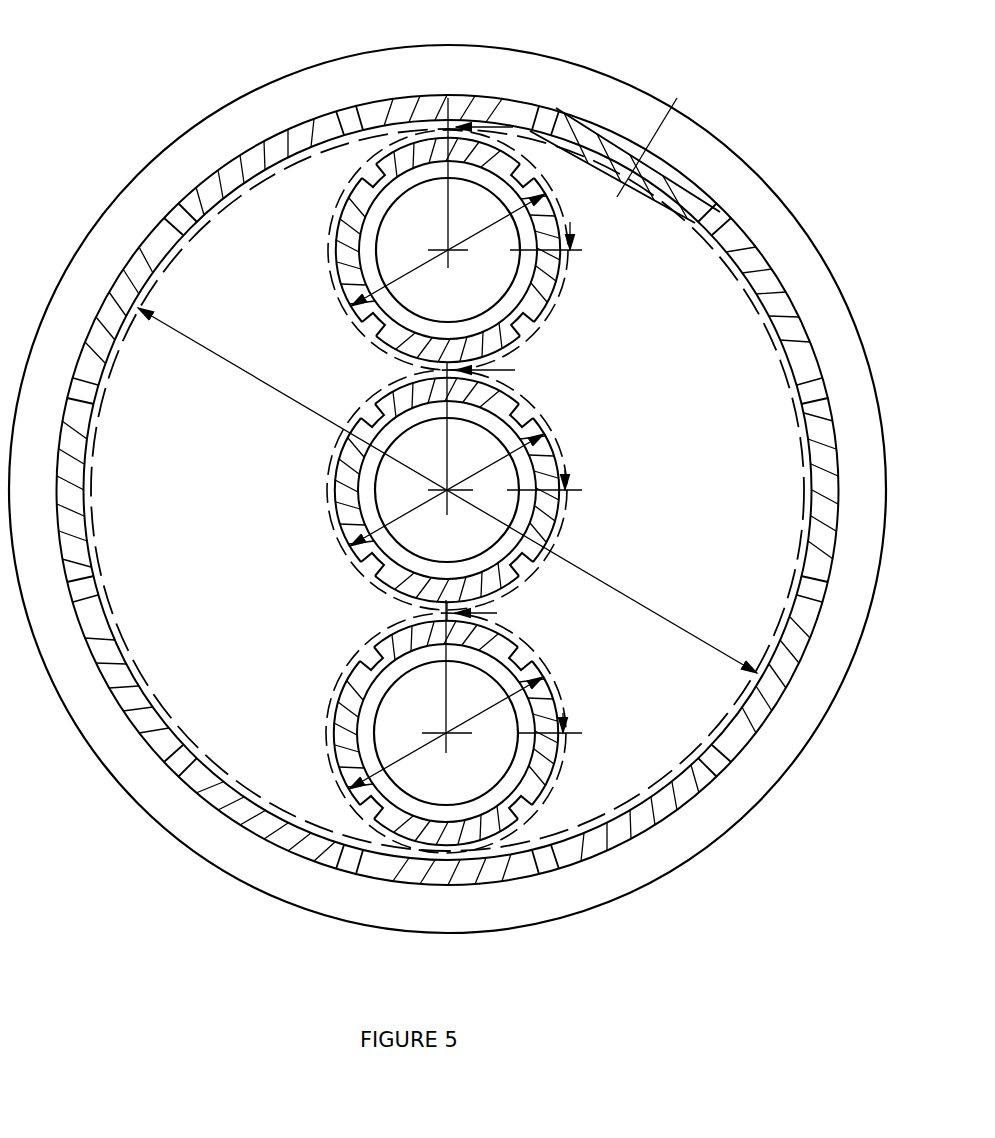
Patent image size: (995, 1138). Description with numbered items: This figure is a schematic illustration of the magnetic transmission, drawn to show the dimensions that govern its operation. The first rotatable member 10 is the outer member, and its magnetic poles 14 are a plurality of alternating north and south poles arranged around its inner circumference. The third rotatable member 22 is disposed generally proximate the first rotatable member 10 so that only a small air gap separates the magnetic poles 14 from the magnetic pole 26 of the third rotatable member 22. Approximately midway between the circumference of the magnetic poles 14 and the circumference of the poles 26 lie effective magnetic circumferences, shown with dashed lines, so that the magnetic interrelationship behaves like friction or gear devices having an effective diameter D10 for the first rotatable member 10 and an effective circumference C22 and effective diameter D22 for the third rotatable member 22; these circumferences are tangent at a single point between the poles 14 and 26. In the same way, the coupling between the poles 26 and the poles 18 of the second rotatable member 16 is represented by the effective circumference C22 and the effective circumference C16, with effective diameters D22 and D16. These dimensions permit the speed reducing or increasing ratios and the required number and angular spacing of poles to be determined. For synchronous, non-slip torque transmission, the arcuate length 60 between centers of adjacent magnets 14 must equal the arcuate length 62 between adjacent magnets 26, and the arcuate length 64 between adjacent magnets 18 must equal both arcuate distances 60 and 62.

The first rotatable member 10 is at (253, 110).
The magnetic poles 14 is at (503, 115).
The second rotatable member 16 is at (525, 522).
The magnetic poles 18 is at (400, 396).
The third rotatable member 22 is at (526, 290).
The magnetic pole 26 is at (340, 258).
The arcuate length 60 is at (592, 158).
The arcuate length 62 is at (612, 172).
The arcuate length 64 is at (537, 400).
The effective circumference C16 is at (345, 511).
The effective circumference C22 is at (505, 348).
The effective diameter D10 is at (650, 607).
The effective diameter D16 is at (352, 470).
The effective diameter D22 is at (345, 232).